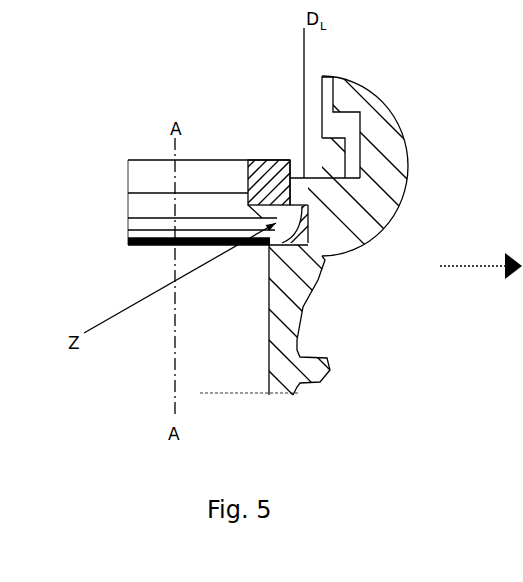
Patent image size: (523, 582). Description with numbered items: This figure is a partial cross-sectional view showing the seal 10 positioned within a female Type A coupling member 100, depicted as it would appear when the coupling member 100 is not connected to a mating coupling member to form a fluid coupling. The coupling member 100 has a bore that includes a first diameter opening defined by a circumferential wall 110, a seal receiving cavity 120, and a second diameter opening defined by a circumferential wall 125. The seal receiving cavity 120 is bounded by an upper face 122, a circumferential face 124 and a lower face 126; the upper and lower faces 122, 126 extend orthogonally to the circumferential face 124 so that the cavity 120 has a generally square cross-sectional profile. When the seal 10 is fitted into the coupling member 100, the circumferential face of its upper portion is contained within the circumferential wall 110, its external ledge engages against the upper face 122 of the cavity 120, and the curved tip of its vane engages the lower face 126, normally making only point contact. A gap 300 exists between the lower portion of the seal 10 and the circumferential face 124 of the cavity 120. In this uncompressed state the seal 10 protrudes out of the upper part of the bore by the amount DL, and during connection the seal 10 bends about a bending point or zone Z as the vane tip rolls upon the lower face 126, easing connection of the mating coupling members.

The seal 10 is at (138, 160).
The female Type A coupling member 100 is at (375, 118).
The circumferential wall 110 is at (288, 186).
The seal receiving cavity 120 is at (312, 245).
The upper face 122 is at (309, 205).
The circumferential face 124 is at (312, 235).
The circumferential wall 125 is at (269, 362).
The lower face 126 is at (298, 247).
The gap 300 is at (310, 218).